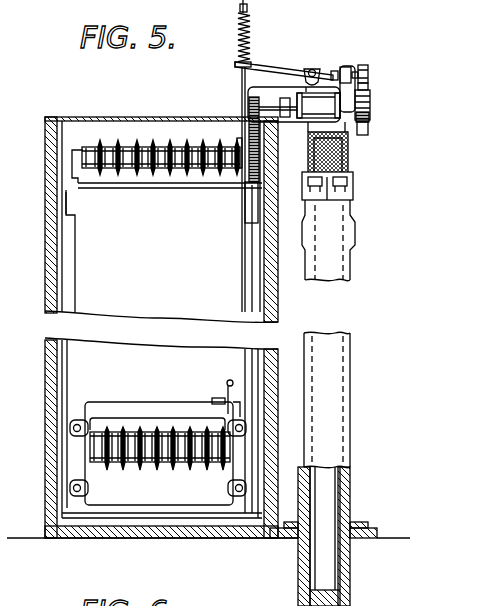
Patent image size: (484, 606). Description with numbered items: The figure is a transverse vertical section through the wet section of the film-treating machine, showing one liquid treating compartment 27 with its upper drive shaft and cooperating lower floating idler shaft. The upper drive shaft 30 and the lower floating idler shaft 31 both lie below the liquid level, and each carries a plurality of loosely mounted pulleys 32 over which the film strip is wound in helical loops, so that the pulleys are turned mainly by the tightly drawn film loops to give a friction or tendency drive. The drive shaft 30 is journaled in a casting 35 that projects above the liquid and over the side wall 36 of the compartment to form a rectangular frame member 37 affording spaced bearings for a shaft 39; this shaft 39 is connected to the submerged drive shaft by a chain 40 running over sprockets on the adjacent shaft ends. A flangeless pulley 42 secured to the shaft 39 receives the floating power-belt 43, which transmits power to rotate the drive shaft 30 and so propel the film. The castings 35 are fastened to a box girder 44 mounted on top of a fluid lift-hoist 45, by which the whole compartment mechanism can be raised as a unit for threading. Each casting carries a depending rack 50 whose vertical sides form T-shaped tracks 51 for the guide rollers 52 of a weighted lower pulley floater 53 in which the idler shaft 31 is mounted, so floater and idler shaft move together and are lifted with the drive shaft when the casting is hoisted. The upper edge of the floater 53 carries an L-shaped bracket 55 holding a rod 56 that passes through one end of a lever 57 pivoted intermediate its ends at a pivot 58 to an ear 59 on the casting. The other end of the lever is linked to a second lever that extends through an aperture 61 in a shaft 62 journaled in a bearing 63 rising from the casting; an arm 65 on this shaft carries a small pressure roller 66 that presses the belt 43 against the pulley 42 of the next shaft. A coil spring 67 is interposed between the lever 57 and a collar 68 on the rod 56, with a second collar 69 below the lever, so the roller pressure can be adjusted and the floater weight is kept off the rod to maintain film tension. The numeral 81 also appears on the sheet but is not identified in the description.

The liquid treating compartment 27 is at (78, 247).
The upper drive shaft 30 is at (78, 153).
The lower floating idler shaft 31 is at (220, 457).
The pulley 32 is at (127, 140).
The casting 35 is at (242, 97).
The side wall 36 is at (46, 287).
The rectangular frame member 37 is at (293, 123).
The shaft 39 is at (370, 108).
The chain 40 is at (255, 182).
The flangeless pulley 42 is at (369, 115).
The floating power-belt 43 is at (365, 133).
The box girder 44 is at (347, 163).
The fluid lift-hoist 45 is at (343, 438).
The depending rack 50 is at (252, 303).
The T-shaped track 51 is at (75, 284).
The guide roller 52 is at (70, 486).
The lower pulley floater 53 is at (137, 410).
The L-shaped bracket 55 is at (228, 400).
The rod 56 is at (241, 284).
The lever 57 is at (263, 64).
The pivot 58 is at (313, 68).
The ear 59 is at (308, 66).
The aperture 61 is at (335, 71).
The shaft 62 is at (368, 73).
The bearing 63 is at (347, 67).
The arm 65 is at (357, 68).
The pressure roller 66 is at (368, 87).
The coil spring 67 is at (238, 42).
The collar 68 is at (240, 12).
The second collar 69 is at (240, 68).
The reference numeral 81 is at (472, 388).